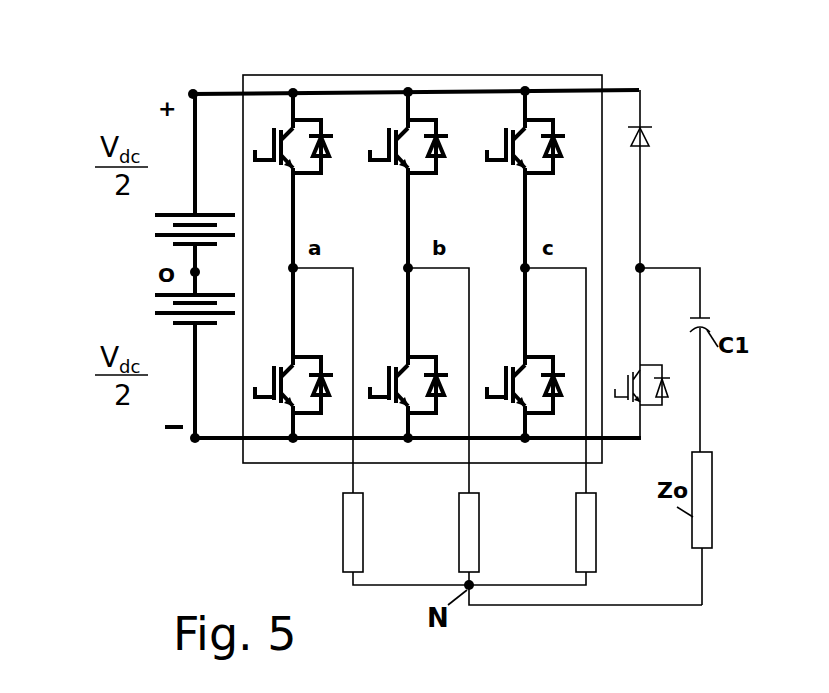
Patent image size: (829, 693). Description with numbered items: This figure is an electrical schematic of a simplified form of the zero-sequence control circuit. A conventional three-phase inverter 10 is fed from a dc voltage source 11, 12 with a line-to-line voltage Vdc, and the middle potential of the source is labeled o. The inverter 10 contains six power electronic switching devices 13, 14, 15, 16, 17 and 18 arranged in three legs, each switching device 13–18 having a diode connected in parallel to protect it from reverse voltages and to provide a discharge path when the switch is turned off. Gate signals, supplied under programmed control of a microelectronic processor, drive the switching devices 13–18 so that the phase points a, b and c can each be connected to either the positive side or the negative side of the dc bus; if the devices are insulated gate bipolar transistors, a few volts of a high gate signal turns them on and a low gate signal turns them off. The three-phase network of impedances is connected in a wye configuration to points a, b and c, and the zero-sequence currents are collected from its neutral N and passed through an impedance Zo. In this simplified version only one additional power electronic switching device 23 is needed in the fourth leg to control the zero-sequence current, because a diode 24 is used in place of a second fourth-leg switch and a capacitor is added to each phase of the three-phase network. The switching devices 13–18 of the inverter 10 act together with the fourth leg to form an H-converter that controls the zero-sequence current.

The three-phase inverter 10 is at (582, 74).
The dc voltage source 11 is at (157, 235).
The dc voltage source 12 is at (160, 313).
The power electronic switching device 13 is at (260, 153).
The power electronic switching device 14 is at (265, 382).
The power electronic switching device 15 is at (367, 158).
The power electronic switching device 16 is at (380, 375).
The power electronic switching device 17 is at (500, 152).
The power electronic switching device 18 is at (503, 367).
The power electronic switching device 23 is at (630, 377).
The diode 24 is at (648, 145).